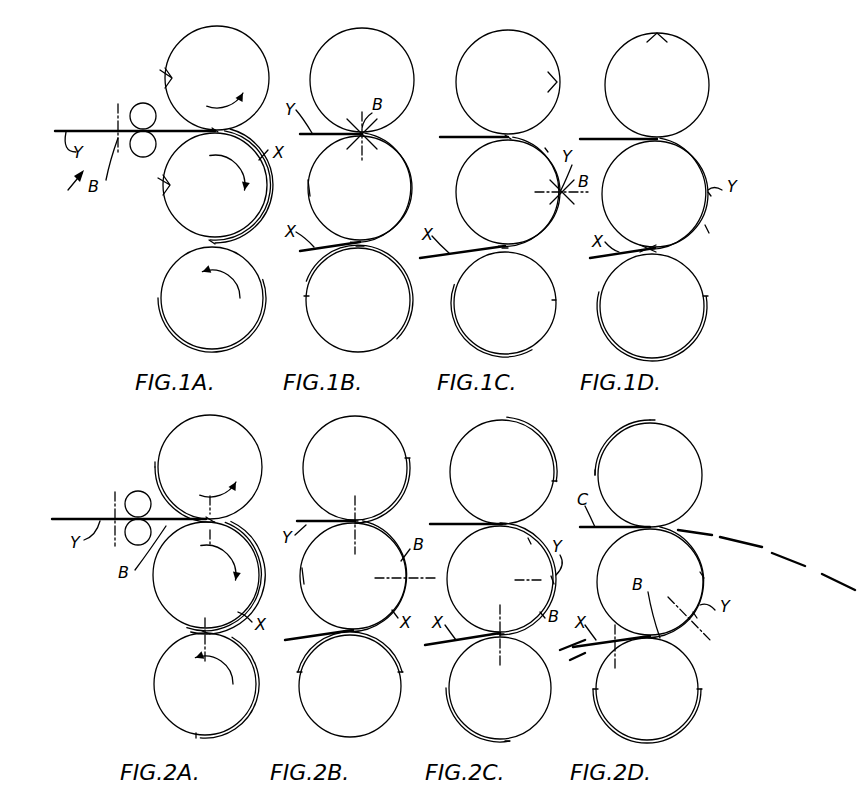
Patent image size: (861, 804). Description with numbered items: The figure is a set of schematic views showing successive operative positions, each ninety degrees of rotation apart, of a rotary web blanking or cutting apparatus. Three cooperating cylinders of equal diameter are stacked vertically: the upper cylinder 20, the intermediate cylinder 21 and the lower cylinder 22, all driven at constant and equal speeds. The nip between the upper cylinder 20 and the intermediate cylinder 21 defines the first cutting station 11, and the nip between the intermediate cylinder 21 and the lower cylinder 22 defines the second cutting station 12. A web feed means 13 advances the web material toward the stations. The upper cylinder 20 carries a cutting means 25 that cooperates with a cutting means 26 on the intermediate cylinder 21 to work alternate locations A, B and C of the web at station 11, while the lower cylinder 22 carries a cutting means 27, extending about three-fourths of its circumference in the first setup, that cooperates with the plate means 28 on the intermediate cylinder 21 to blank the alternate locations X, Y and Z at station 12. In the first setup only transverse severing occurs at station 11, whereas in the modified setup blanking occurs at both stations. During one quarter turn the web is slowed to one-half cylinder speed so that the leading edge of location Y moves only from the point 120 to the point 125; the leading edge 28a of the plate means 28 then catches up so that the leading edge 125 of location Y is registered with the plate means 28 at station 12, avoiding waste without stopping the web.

In FIG. 1A, the first cutting station 11 is at (218, 130).
In FIG. 1B, the first cutting station 11 is at (370, 131).
In FIG. 1C, the first cutting station 11 is at (507, 130).
In FIG. 2A, the first cutting station 11 is at (222, 516).
In FIG. 2C, the first cutting station 11 is at (505, 518).
In FIG. 1A, the second cutting station 12 is at (210, 241).
In FIG. 1B, the second cutting station 12 is at (358, 251).
In FIG. 1C, the second cutting station 12 is at (503, 252).
In FIG. 1D, the second cutting station 12 is at (648, 248).
In FIG. 2A, the second cutting station 12 is at (196, 636).
In FIG. 2C, the second cutting station 12 is at (510, 645).
In FIG. 1A, the web feed means 13 is at (64, 189).
In FIG. 1A, the upper cylinder 20 is at (233, 33).
In FIG. 1B, the upper cylinder 20 is at (388, 42).
In FIG. 1C, the upper cylinder 20 is at (536, 46).
In FIG. 1D, the upper cylinder 20 is at (688, 46).
In FIG. 2A, the upper cylinder 20 is at (180, 438).
In FIG. 2B, the upper cylinder 20 is at (326, 436).
In FIG. 2C, the upper cylinder 20 is at (476, 436).
In FIG. 2D, the upper cylinder 20 is at (680, 446).
In FIG. 1A, the intermediate cylinder 21 is at (258, 173).
In FIG. 1B, the intermediate cylinder 21 is at (398, 178).
In FIG. 1C, the intermediate cylinder 21 is at (531, 222).
In FIG. 1D, the intermediate cylinder 21 is at (689, 168).
In FIG. 2A, the intermediate cylinder 21 is at (162, 590).
In FIG. 2B, the intermediate cylinder 21 is at (311, 572).
In FIG. 2C, the intermediate cylinder 21 is at (529, 545).
In FIG. 2D, the intermediate cylinder 21 is at (685, 630).
In FIG. 1A, the lower cylinder 22 is at (166, 282).
In FIG. 1B, the lower cylinder 22 is at (320, 290).
In FIG. 1C, the lower cylinder 22 is at (469, 290).
In FIG. 1D, the lower cylinder 22 is at (621, 282).
In FIG. 2A, the lower cylinder 22 is at (161, 698).
In FIG. 2B, the lower cylinder 22 is at (326, 722).
In FIG. 2C, the lower cylinder 22 is at (529, 725).
In FIG. 2D, the lower cylinder 22 is at (691, 670).
In FIG. 1A, the cutting means 25 is at (168, 72).
In FIG. 2A, the cutting means 25 is at (160, 478).
In FIG. 2B, the cutting means 25 is at (399, 490).
In FIG. 2C, the cutting means 25 is at (546, 452).
In FIG. 2D, the cutting means 25 is at (608, 458).
In FIG. 1A, the cutting means 26 is at (162, 190).
In FIG. 1A, the cutting means 27 is at (192, 348).
In FIG. 1B, the cutting means 27 is at (391, 345).
In FIG. 1C, the cutting means 27 is at (466, 345).
In FIG. 1D, the cutting means 27 is at (618, 346).
In FIG. 2A, the cutting means 27 is at (244, 718).
In FIG. 2B, the cutting means 27 is at (312, 670).
In FIG. 2C, the cutting means 27 is at (452, 678).
In FIG. 2D, the cutting means 27 is at (598, 706).
In FIG. 1A, the cutting means 28 is at (263, 194).
In FIG. 1B, the cutting means 28 is at (413, 195).
In FIG. 1C, the cutting means 28 is at (458, 205).
In FIG. 1D, the cutting means 28 is at (607, 186).
In FIG. 2A, the cutting means 28 is at (262, 590).
In FIG. 2B, the cutting means 28 is at (406, 592).
In FIG. 2C, the cutting means 28 is at (553, 592).
In FIG. 2D, the cutting means 28 is at (698, 568).
In FIG. 1A, the leading edge of the plate means 28a is at (213, 238).
In FIG. 1B, the leading edge of the plate means 28a is at (312, 192).
In FIG. 1C, the leading edge of the plate means 28a is at (545, 150).
In FIG. 1D, the leading edge of the plate means 28a is at (709, 195).
In FIG. 2A, the leading edge of the plate means 28a is at (205, 626).
In FIG. 2B, the leading edge of the plate means 28a is at (309, 582).
In FIG. 2C, the leading edge of the plate means 28a is at (529, 540).
In FIG. 2D, the leading edge of the plate means 28a is at (703, 576).
In FIG. 1C, the point 120 is at (566, 205).
In FIG. 1D, the leading edge of the location Y 125 is at (706, 232).
In FIG. 2C, the leading edge of the location Y 125 is at (553, 580).
In FIG. 2D, the leading edge of the location Y 125 is at (696, 615).